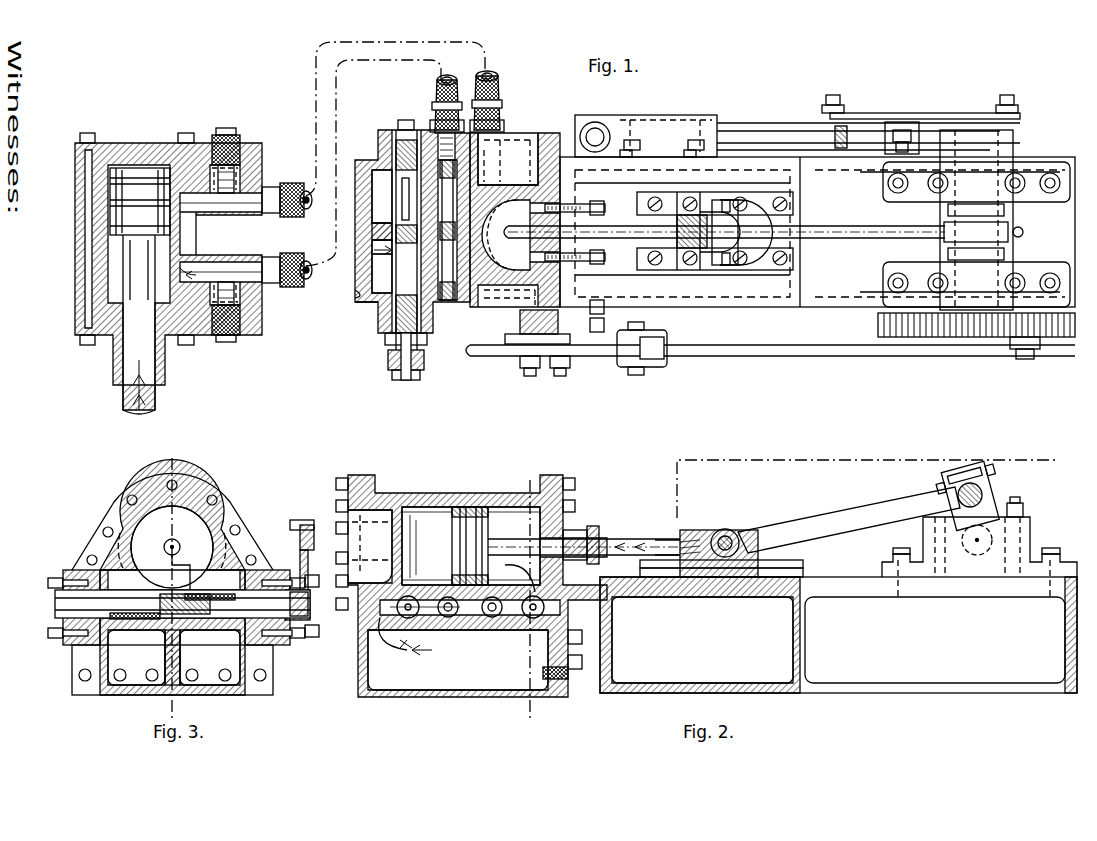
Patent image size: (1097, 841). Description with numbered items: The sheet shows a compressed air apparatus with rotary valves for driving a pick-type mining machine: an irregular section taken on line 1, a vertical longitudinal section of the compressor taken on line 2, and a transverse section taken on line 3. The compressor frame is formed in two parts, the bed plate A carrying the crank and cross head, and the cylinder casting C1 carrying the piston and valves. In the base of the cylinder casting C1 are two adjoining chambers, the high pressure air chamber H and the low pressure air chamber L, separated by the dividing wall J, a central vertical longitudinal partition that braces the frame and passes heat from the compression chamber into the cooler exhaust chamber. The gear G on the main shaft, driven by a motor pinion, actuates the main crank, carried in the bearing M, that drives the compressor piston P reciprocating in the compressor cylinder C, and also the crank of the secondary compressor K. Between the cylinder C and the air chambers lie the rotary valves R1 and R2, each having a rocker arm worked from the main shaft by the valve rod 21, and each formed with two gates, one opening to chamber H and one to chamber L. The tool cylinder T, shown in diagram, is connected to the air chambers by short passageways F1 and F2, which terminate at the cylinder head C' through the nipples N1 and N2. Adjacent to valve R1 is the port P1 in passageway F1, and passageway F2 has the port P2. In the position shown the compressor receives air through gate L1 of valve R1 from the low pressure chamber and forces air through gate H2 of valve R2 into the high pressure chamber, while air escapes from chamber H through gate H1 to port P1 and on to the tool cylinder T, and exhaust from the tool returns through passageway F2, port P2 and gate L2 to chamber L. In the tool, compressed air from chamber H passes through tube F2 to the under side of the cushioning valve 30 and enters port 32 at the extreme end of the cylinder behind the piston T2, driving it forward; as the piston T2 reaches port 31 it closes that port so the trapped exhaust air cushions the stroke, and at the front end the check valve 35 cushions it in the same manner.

In FIG. 1, the cylinder T is at (131, 190).
In FIG. 1, the piston T2 is at (135, 216).
In FIG. 1, the cushioning valve 30 is at (262, 170).
In FIG. 1, the port 31 is at (211, 203).
In FIG. 1, the port 32 is at (195, 190).
In FIG. 1, the check valve 35 is at (228, 290).
In FIG. 1, the passageway F1 is at (296, 288).
In FIG. 1, the passageway F2 is at (296, 218).
In FIG. 1, the nipple N1 is at (432, 124).
In FIG. 1, the nipple N2 is at (500, 126).
In FIG. 1, the rotary valve R1 is at (410, 148).
In FIG. 2, the rotary valve R1 is at (408, 618).
In FIG. 1, the low pressure air chamber L is at (380, 205).
In FIG. 3, the low pressure air chamber L is at (136, 657).
In FIG. 1, the gate L1 is at (405, 184).
In FIG. 1, the dividing wall J is at (380, 233).
In FIG. 3, the dividing wall J is at (160, 690).
In FIG. 1, the gate H1 is at (372, 252).
In FIG. 2, the gate H1 is at (400, 649).
In FIG. 1, the high pressure air chamber H is at (380, 285).
In FIG. 3, the high pressure air chamber H is at (210, 657).
In FIG. 2, the high pressure air chamber H is at (458, 660).
In FIG. 1, the cylinder casting C1 is at (365, 306).
In FIG. 3, the cylinder casting C1 is at (112, 690).
In FIG. 2, the cylinder casting C1 is at (380, 692).
In FIG. 1, the port P1 is at (448, 285).
In FIG. 2, the port P1 is at (448, 617).
In FIG. 1, the cylinder head C' is at (515, 220).
In FIG. 3, the cylinder head C' is at (155, 525).
In FIG. 1, the secondary compressor K is at (694, 130).
In FIG. 1, the bed plate A is at (817, 232).
In FIG. 2, the bed plate A is at (838, 635).
In FIG. 1, the crank shaft bearing M is at (970, 130).
In FIG. 2, the crank shaft bearing M is at (985, 540).
In FIG. 1, the gear G is at (895, 326).
In FIG. 1, the valve rod 21 is at (760, 345).
In FIG. 3, the section line 2 is at (180, 578).
In FIG. 3, the rotary valve R2 is at (60, 606).
In FIG. 2, the rotary valve R2 is at (540, 618).
In FIG. 3, the gate L2 is at (120, 618).
In FIG. 3, the gate H2 is at (228, 620).
In FIG. 2, the gate H2 is at (530, 600).
In FIG. 2, the compressor cylinder C is at (471, 522).
In FIG. 2, the compressor piston P is at (470, 540).
In FIG. 2, the section line 3 is at (529, 588).
In FIG. 2, the section line 1 is at (340, 626).
In FIG. 2, the port P2 is at (492, 617).